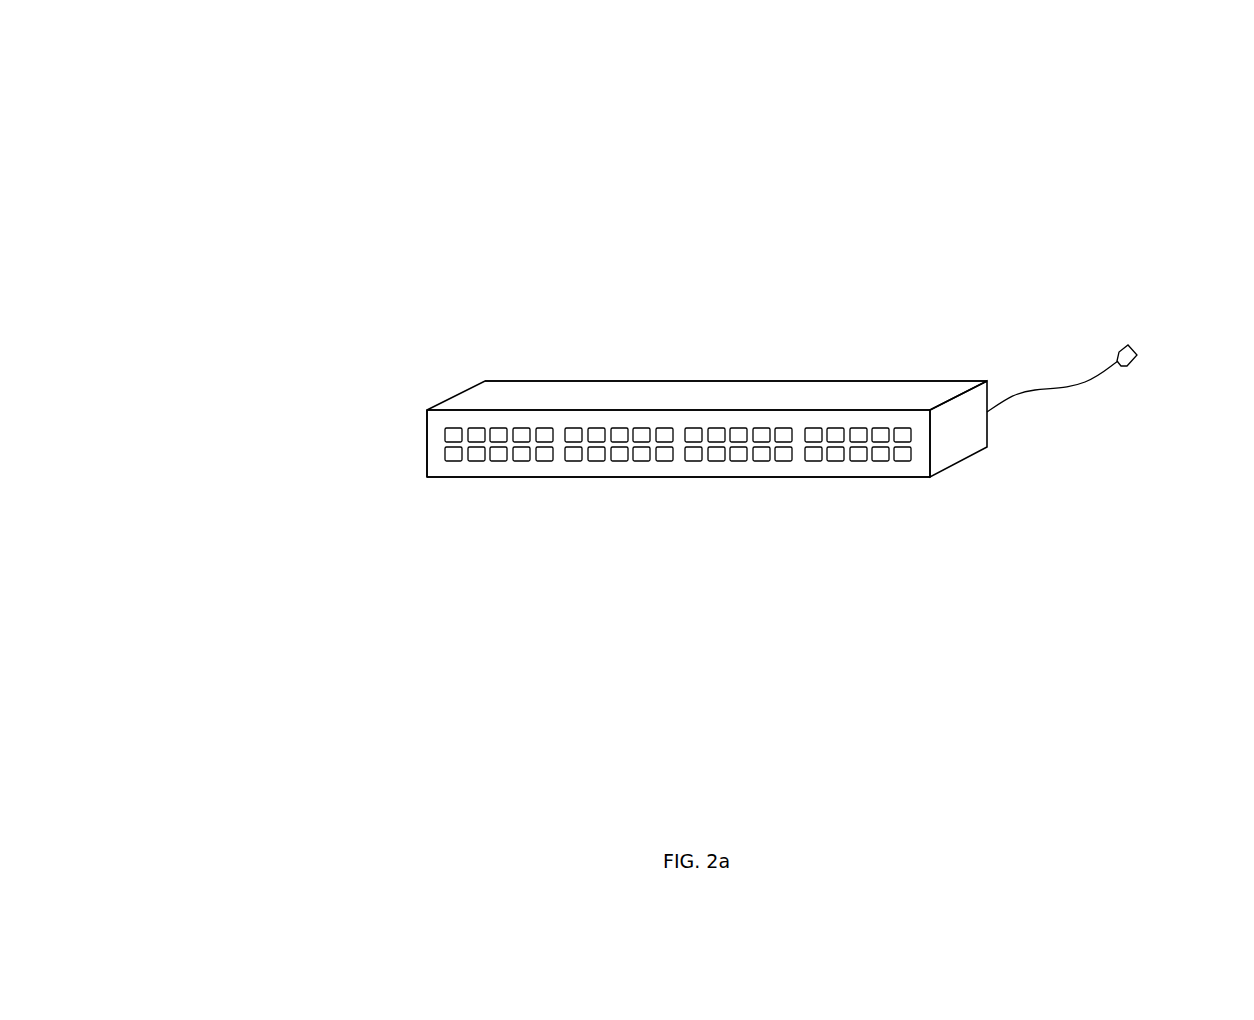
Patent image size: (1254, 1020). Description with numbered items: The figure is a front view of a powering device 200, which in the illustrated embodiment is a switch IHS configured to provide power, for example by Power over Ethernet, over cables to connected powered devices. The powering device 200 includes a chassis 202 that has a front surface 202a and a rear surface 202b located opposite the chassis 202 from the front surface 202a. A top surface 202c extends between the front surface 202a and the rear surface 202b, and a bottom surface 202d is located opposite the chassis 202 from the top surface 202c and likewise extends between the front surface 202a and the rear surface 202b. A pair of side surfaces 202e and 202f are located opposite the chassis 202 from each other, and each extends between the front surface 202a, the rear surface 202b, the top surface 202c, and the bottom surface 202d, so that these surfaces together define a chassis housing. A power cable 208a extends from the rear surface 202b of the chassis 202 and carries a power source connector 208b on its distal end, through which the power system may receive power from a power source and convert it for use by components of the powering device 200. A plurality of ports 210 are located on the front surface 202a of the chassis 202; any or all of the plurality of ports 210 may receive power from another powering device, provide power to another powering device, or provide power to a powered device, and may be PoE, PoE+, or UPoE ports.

The powering device 200 is at (222, 143).
The chassis 202 is at (932, 478).
The front surface 202a is at (443, 466).
The rear surface 202b is at (858, 378).
The top surface 202c is at (618, 397).
The bottom surface 202d is at (677, 478).
The side surface 202e is at (427, 443).
The side surface 202f is at (957, 427).
The power cable 208a is at (1077, 385).
The power source connector 208b is at (1133, 358).
The plurality of ports 210 is at (477, 430).